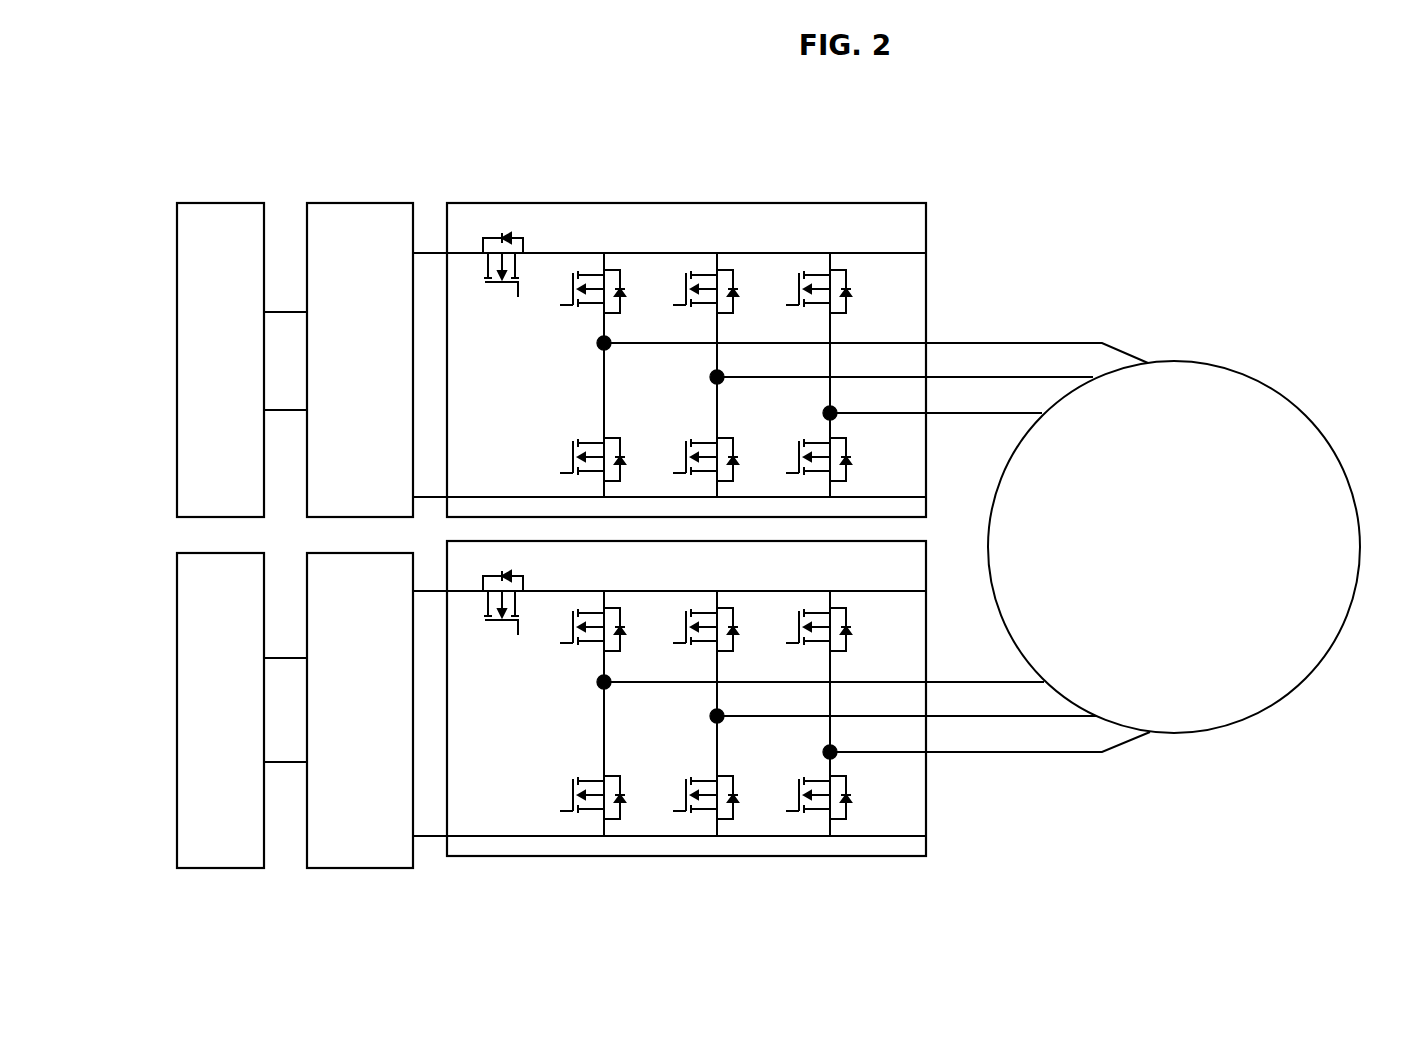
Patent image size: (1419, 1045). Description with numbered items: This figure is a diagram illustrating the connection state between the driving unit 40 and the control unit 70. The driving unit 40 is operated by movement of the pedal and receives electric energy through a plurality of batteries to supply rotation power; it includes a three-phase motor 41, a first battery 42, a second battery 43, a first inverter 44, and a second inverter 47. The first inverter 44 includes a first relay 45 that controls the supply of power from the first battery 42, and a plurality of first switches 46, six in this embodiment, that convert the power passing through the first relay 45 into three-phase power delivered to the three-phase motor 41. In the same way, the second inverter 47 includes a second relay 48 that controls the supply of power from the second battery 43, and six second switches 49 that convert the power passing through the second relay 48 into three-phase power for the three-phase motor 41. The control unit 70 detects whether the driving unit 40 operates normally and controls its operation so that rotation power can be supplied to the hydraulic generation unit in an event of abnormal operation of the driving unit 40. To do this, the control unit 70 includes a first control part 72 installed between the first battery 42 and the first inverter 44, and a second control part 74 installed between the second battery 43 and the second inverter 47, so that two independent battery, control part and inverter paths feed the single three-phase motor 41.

The driving unit 40 is at (768, 516).
The 3-phase motor 41 is at (1257, 378).
The first battery 42 is at (220, 203).
The second battery 43 is at (220, 870).
The first inverter 44 is at (686, 326).
The first relay 45 is at (522, 220).
The first switches 46 is at (632, 270).
The second inverter 47 is at (686, 744).
The second relay 48 is at (502, 645).
The second switches 49 is at (638, 810).
The control unit 70 is at (413, 160).
The first control part 72 is at (358, 203).
The second control part 74 is at (358, 870).